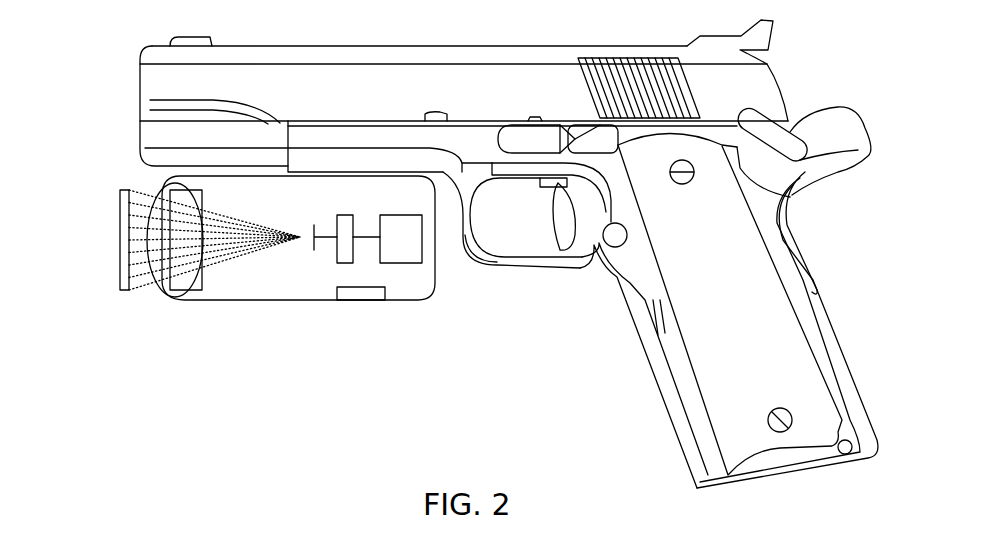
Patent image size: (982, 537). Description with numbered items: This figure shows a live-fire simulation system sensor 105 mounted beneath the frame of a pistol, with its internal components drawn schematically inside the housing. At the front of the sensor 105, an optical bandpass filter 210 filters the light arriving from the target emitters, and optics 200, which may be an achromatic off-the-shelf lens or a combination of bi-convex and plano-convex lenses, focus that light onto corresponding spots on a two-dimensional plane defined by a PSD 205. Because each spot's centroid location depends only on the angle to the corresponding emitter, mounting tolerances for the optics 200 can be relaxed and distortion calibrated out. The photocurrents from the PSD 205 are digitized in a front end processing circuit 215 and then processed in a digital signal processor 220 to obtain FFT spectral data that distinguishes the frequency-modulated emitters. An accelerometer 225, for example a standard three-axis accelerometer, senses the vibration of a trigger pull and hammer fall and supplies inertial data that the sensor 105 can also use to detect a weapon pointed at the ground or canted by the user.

The sensor 105 is at (268, 300).
The optics 200 is at (168, 288).
The PSD 205 is at (313, 228).
The optical bandpass filter 210 is at (120, 240).
The front end processing circuit 215 is at (337, 252).
The digital signal processor 220 is at (420, 263).
The accelerometer 225 is at (357, 300).